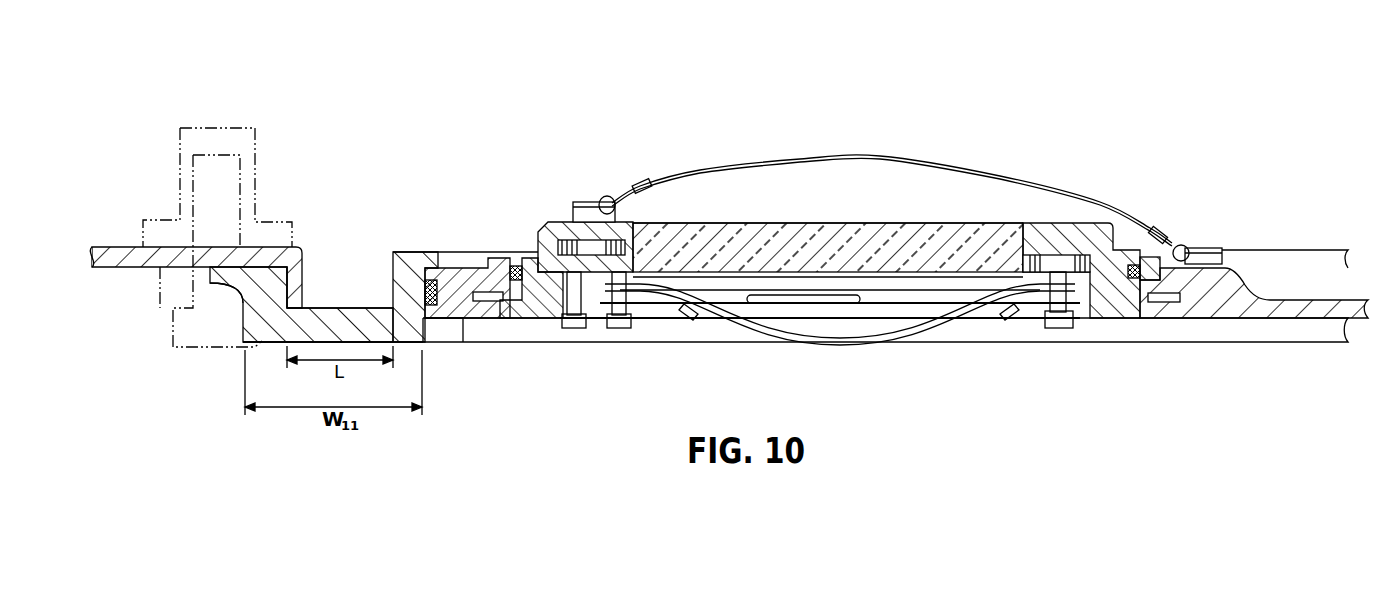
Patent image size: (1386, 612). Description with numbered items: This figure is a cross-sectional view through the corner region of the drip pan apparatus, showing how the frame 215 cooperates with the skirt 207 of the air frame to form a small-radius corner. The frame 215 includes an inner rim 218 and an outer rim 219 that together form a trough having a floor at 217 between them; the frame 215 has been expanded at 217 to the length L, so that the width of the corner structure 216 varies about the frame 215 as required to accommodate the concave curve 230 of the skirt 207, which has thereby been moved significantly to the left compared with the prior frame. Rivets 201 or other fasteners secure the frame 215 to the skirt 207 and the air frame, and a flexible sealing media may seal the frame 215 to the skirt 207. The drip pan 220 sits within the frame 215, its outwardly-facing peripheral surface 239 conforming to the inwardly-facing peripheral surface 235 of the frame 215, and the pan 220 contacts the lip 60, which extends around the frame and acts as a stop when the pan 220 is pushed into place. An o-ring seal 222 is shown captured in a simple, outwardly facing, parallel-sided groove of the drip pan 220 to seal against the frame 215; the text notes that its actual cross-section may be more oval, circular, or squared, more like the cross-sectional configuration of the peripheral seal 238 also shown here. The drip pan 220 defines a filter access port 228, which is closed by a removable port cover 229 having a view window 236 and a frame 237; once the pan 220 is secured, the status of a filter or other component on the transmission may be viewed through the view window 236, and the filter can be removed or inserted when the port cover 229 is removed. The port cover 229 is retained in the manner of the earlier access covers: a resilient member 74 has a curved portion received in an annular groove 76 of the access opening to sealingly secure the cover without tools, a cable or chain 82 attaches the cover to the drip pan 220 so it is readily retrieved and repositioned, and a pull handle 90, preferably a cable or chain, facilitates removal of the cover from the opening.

The rivets 201 is at (178, 200).
The outer rim 219 is at (258, 262).
The skirt 207 is at (302, 286).
The floor 217 is at (352, 310).
The corner structure 216 is at (224, 333).
The frame 215 is at (268, 344).
The concave curve 230 is at (273, 293).
The outwardly-facing peripheral surface 239 is at (404, 300).
The inner rim 218 is at (434, 252).
The lip 60 is at (458, 268).
The filter access port 228 is at (512, 266).
The frame 237 is at (552, 222).
The peripheral seal 238 is at (522, 340).
The o-ring seal 222 is at (462, 322).
The inwardly-facing peripheral surface 235 is at (440, 346).
The view window 236 is at (948, 222).
The removable port cover 229 is at (860, 214).
The cable or chain 82 is at (850, 156).
The resilient member 74 is at (792, 303).
The pull handle 90 is at (848, 346).
The annular groove 76 is at (1163, 302).
The drip pan 220 is at (1243, 318).